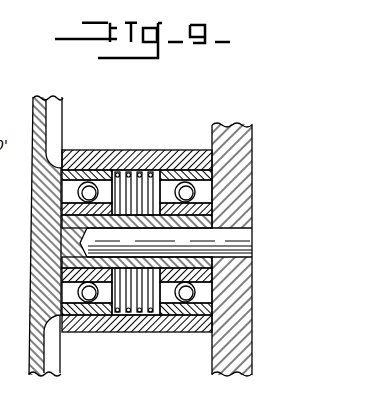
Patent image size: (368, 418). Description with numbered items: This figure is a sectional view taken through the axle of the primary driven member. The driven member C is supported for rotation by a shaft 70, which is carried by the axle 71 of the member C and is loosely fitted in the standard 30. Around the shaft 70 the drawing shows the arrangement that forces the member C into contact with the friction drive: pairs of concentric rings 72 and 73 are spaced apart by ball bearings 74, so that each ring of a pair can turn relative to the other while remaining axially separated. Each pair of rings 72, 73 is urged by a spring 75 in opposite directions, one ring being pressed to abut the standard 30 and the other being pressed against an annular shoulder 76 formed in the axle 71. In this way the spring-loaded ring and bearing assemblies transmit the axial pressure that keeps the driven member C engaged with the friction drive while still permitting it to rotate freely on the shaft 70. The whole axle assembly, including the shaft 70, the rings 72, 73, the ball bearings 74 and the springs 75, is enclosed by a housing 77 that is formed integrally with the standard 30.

The driven member C is at (61, 127).
The standard 30 is at (243, 173).
The shaft 70 is at (248, 238).
The axle 71 is at (250, 269).
The concentric ring 72 is at (82, 174).
The concentric ring 73 is at (177, 182).
The ball bearings 74 is at (87, 300).
The spring 75 is at (148, 172).
The annular shoulder 76 is at (60, 274).
The housing 77 is at (118, 172).